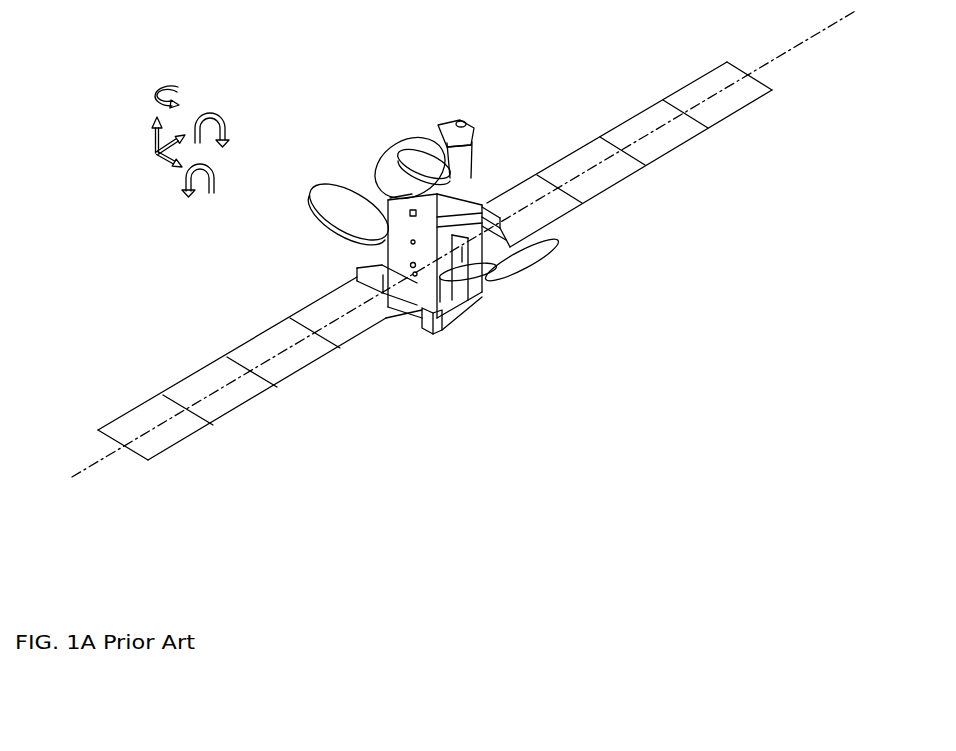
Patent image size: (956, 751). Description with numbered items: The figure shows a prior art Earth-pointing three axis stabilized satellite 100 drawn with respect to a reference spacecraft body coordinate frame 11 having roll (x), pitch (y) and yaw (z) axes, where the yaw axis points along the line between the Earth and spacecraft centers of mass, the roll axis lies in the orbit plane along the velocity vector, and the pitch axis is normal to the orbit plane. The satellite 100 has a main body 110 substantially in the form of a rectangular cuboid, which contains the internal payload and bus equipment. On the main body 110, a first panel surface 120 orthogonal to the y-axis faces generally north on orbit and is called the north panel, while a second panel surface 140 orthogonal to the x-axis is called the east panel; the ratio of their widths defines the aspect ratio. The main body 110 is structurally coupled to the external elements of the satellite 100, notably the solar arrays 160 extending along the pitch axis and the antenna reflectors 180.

The reference spacecraft body coordinate frame 11 is at (125, 57).
The satellite 100 is at (452, 62).
The main body 110 is at (444, 348).
The first panel surface 120 is at (400, 257).
The second panel surface 140 is at (457, 300).
The solar arrays 160 is at (728, 104).
The antenna reflectors 180 is at (540, 257).